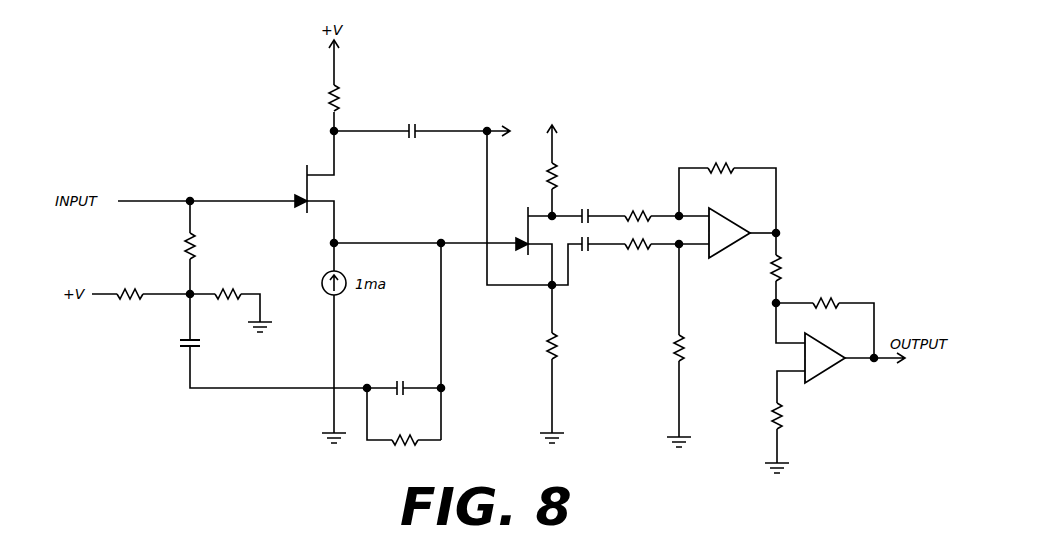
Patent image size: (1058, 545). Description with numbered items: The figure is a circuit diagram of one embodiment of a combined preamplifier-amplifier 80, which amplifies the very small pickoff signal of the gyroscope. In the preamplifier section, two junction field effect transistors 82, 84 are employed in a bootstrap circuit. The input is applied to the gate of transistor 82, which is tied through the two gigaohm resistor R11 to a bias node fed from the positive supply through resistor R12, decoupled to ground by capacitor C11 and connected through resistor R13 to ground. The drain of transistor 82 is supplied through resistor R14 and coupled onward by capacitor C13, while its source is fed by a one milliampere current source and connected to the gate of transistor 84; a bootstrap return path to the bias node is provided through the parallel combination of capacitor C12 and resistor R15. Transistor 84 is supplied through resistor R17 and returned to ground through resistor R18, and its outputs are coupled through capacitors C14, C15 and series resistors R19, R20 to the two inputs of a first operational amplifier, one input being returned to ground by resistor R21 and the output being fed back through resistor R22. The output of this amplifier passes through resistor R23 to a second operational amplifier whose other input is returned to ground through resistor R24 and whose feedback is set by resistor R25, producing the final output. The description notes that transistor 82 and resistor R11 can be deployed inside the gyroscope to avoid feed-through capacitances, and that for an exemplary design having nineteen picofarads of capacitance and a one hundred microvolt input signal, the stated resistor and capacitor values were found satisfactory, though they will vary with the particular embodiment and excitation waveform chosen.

The combined preamplifier-amplifier 80 is at (632, 74).
The junction field effect transistor 82 is at (305, 180).
The junction field effect transistor 84 is at (524, 231).
The resistor R11 is at (205, 245).
The resistor R12 is at (128, 281).
The resistor R13 is at (227, 281).
The resistor R14 is at (312, 98).
The resistor R15 is at (403, 453).
The resistor R17 is at (568, 174).
The resistor R18 is at (567, 347).
The resistor R19 is at (638, 204).
The resistor R20 is at (638, 259).
The resistor R21 is at (694, 348).
The resistor R22 is at (721, 156).
The resistor R23 is at (790, 267).
The resistor R24 is at (791, 415).
The resistor R25 is at (828, 293).
The capacitor C11 is at (204, 345).
The capacitor C12 is at (400, 376).
The capacitor C13 is at (409, 142).
The capacitor C14 is at (588, 203).
The capacitor C15 is at (590, 258).